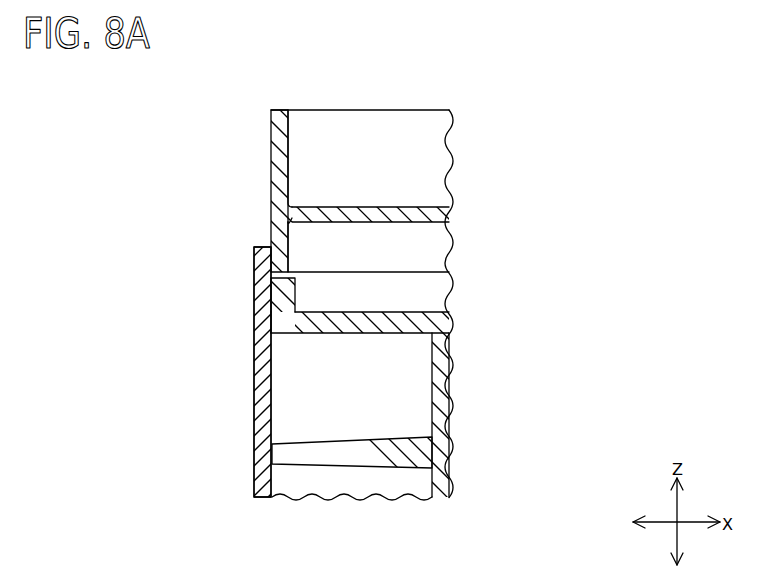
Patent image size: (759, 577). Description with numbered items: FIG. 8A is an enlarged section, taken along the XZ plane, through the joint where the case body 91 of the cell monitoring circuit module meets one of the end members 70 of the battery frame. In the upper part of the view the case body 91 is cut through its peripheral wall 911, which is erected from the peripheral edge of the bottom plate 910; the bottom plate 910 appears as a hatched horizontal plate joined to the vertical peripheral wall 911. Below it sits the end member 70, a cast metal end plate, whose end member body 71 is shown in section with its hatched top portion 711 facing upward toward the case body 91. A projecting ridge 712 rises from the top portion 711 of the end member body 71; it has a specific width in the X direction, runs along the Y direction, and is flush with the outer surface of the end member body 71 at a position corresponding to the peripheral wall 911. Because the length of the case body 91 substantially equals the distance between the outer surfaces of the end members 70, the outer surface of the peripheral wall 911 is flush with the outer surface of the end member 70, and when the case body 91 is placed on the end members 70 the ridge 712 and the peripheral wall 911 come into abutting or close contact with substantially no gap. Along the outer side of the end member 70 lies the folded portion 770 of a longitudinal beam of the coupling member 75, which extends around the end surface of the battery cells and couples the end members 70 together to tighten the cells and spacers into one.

The case body 91 is at (259, 150).
The peripheral wall 911 is at (282, 186).
The bottom plate 910 is at (366, 214).
The projecting ridge 712 is at (283, 293).
The top portion 711 is at (368, 307).
The end member body 71 is at (442, 387).
The end member 70 is at (462, 340).
The coupling member 75 is at (246, 443).
The folded portion 770 is at (266, 381).